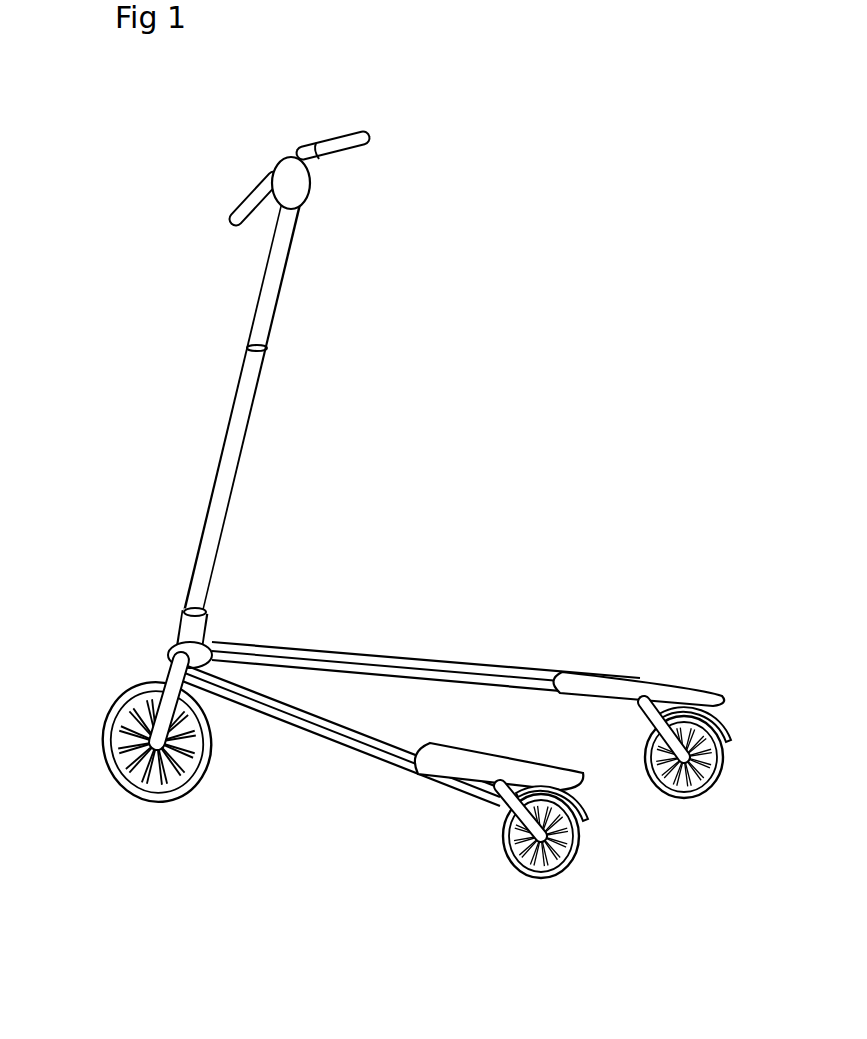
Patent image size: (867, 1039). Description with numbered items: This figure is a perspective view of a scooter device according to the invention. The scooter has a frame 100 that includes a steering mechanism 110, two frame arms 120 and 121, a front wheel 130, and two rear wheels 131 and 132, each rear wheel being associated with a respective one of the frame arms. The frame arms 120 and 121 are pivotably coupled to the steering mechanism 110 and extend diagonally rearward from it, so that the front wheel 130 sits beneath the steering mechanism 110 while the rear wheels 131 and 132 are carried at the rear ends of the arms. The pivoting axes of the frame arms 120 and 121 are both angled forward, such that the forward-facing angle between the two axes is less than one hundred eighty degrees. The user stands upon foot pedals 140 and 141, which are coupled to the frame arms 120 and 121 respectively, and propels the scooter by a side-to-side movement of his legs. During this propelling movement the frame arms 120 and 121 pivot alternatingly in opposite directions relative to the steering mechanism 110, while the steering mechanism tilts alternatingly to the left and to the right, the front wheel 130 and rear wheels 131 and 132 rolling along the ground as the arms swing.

The frame 100 is at (417, 509).
The steering mechanism 110 is at (132, 318).
The frame arm 120 is at (332, 736).
The frame arm 121 is at (408, 660).
The front wheel 130 is at (197, 795).
The rear wheel 131 is at (573, 860).
The rear wheel 132 is at (722, 767).
The foot pedal 140 is at (472, 765).
The foot pedal 141 is at (660, 690).